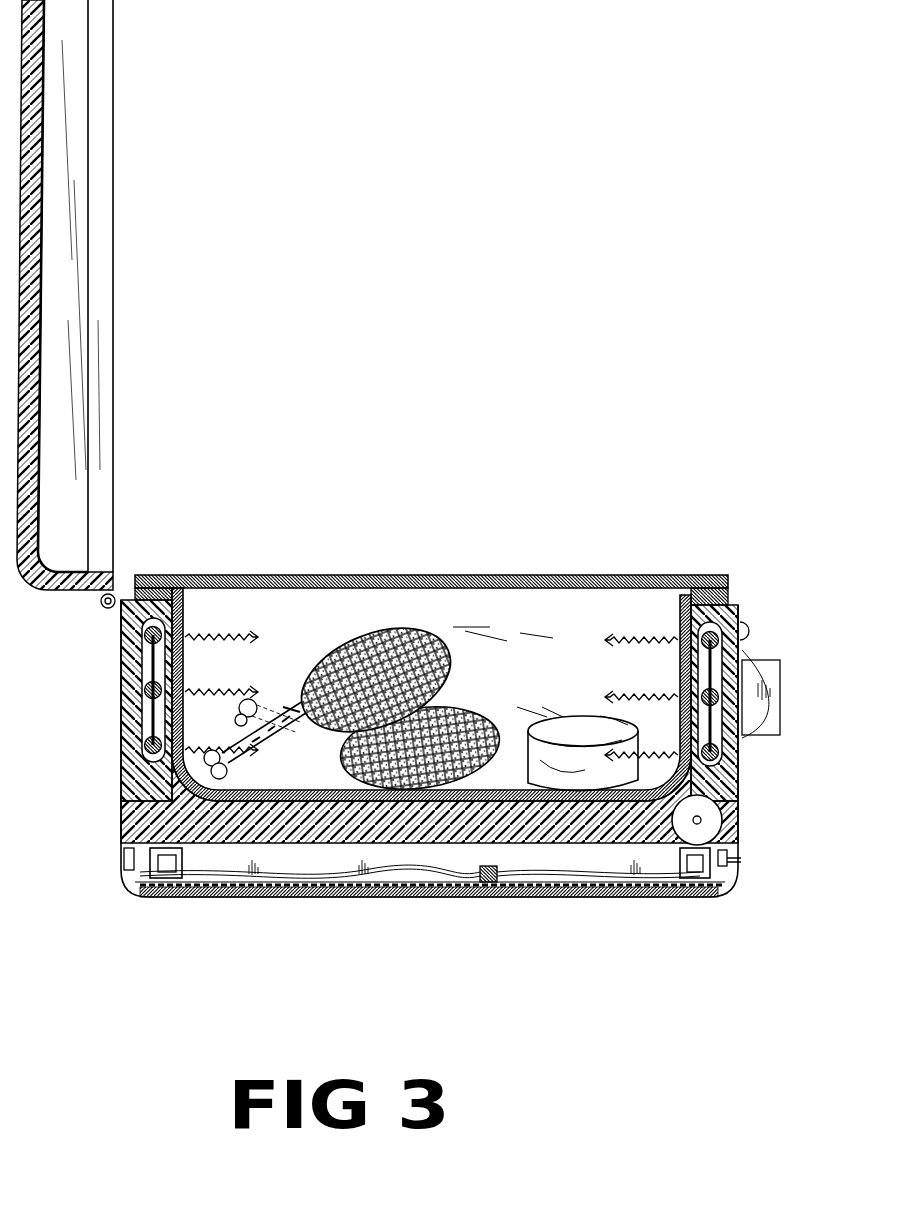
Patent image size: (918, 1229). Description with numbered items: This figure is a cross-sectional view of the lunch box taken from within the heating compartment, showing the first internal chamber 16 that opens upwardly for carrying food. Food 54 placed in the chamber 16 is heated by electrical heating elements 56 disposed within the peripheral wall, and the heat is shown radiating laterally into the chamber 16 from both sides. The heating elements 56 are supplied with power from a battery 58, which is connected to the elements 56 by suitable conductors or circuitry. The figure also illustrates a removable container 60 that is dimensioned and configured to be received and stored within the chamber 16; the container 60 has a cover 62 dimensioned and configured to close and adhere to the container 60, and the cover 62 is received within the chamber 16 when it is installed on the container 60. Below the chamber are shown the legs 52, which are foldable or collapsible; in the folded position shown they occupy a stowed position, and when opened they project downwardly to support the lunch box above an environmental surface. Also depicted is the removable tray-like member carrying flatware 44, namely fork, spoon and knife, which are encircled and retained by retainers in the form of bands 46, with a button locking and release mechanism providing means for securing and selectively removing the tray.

The internal chamber 16 is at (508, 654).
The flatware 44 is at (438, 866).
The bands 46 is at (490, 867).
The legs 52 is at (175, 878).
The food 54 is at (530, 727).
The electrical heating elements 56 is at (145, 745).
The battery 58 is at (712, 808).
The removable container 60 is at (203, 612).
The cover 62 is at (400, 578).